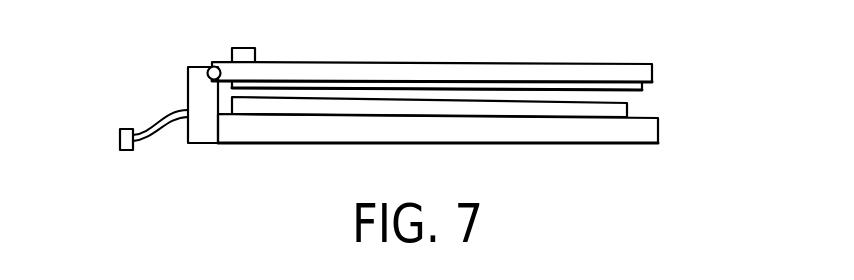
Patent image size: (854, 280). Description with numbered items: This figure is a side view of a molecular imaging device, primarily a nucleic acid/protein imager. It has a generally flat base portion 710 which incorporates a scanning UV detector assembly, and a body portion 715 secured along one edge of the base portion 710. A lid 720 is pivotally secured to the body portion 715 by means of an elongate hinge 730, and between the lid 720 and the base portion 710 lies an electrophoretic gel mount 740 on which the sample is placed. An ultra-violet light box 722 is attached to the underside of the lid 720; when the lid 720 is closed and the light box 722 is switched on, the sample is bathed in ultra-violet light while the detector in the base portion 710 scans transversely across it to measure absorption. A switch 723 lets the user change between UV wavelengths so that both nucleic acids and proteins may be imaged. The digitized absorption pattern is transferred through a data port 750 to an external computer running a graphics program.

The base portion 710 is at (657, 131).
The body portion 715 is at (208, 143).
The lid 720 is at (477, 67).
The ultra-violet light box 722 is at (342, 90).
The switch 723 is at (253, 53).
The elongate hinge 730 is at (209, 68).
The electrophoretic gel mount 740 is at (620, 109).
The data port 750 is at (118, 146).